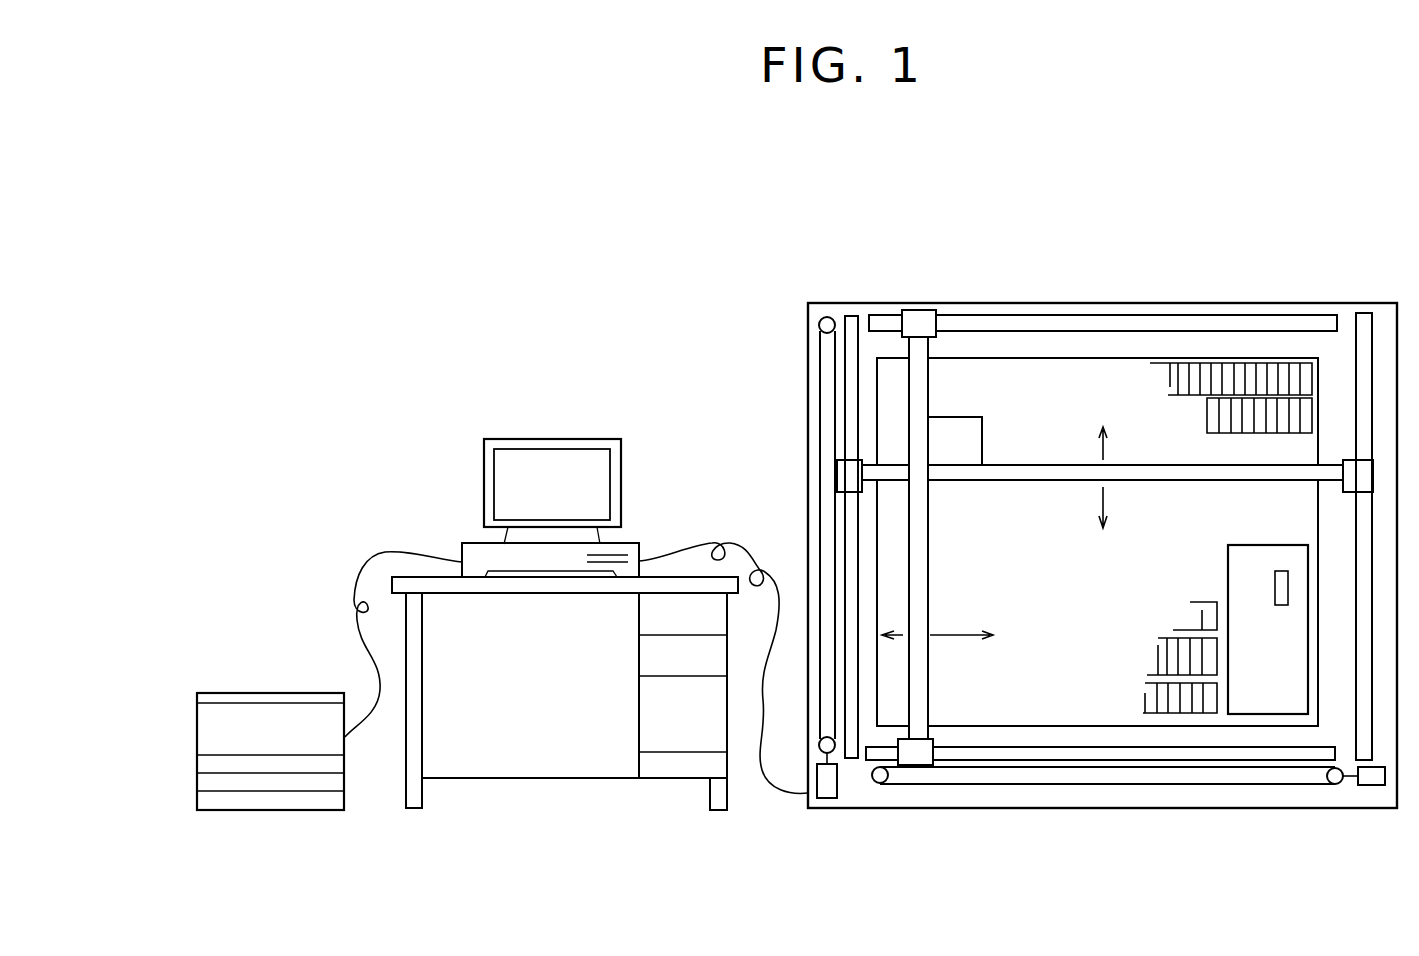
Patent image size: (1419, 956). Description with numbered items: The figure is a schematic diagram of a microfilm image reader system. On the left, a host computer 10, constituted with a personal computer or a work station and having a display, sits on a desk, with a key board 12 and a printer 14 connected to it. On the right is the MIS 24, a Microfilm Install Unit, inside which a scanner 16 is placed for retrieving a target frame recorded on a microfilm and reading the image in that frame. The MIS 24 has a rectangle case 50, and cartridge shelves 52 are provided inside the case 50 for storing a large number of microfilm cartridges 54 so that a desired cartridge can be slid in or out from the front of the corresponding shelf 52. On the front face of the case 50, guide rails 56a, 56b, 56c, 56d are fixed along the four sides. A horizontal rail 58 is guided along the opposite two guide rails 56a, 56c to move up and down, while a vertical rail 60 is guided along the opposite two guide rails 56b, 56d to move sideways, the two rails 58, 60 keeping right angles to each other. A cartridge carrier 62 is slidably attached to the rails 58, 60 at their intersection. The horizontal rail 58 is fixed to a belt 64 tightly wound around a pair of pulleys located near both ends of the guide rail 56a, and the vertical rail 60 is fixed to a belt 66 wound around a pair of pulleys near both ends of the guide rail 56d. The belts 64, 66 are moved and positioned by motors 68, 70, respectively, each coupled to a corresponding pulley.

The host computer 10 is at (575, 440).
The key board 12 is at (545, 575).
The printer 14 is at (288, 693).
The scanner 16 is at (1263, 714).
The MIS (Microfilm Install Unit) 24 is at (1045, 480).
The rectangle case 50 is at (998, 304).
The cartridge shelves 52 is at (1267, 360).
The microfilm cartridges 54 is at (1237, 377).
The guide rail 56a is at (852, 316).
The guide rail 56b is at (1147, 316).
The guide rail 56c is at (1373, 316).
The guide rail 56d is at (1060, 743).
The horizontal rail 58 is at (1022, 465).
The vertical rail 60 is at (925, 693).
The cartridge carrier 62 is at (952, 417).
The belt 64 is at (813, 345).
The belt 66 is at (1188, 785).
The motor 68 is at (837, 783).
The motor 70 is at (1365, 785).